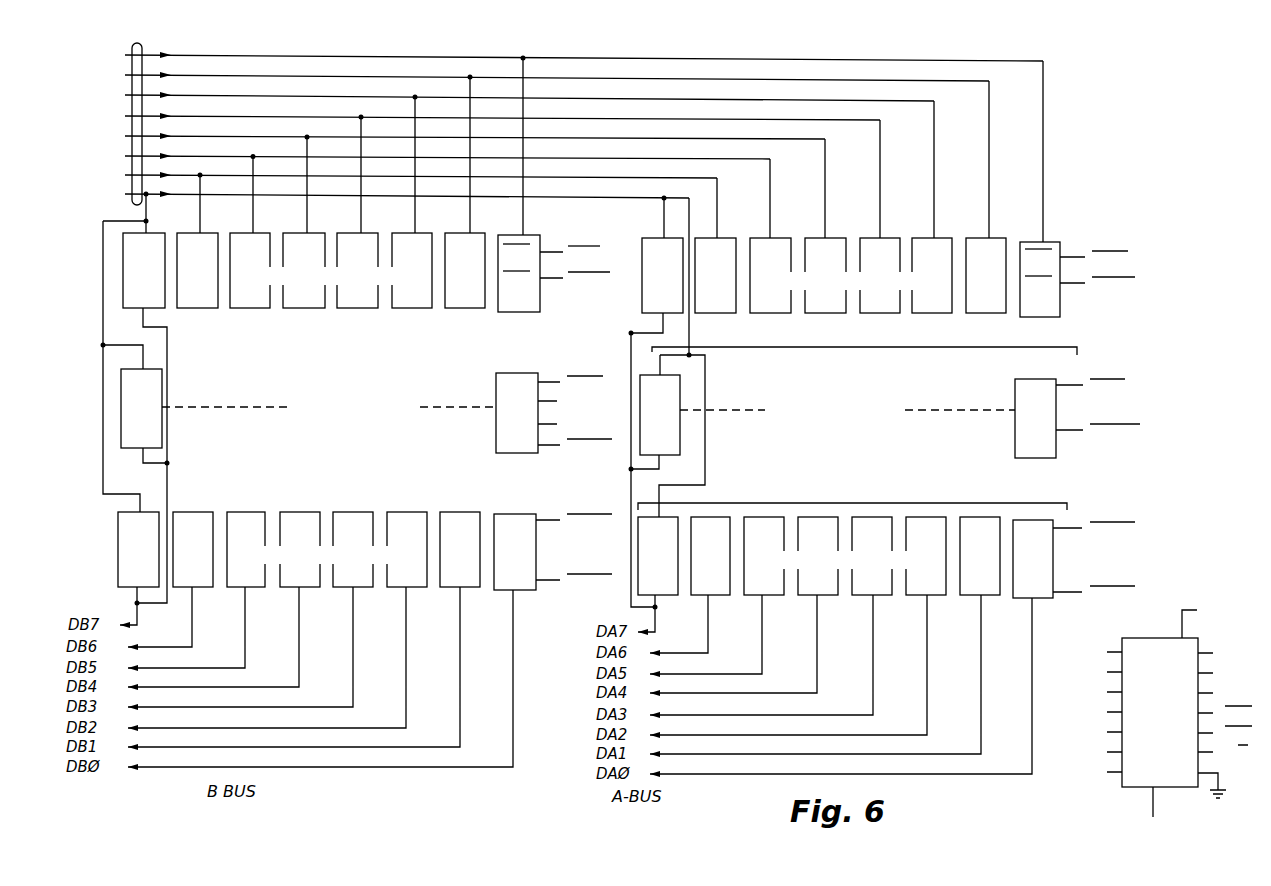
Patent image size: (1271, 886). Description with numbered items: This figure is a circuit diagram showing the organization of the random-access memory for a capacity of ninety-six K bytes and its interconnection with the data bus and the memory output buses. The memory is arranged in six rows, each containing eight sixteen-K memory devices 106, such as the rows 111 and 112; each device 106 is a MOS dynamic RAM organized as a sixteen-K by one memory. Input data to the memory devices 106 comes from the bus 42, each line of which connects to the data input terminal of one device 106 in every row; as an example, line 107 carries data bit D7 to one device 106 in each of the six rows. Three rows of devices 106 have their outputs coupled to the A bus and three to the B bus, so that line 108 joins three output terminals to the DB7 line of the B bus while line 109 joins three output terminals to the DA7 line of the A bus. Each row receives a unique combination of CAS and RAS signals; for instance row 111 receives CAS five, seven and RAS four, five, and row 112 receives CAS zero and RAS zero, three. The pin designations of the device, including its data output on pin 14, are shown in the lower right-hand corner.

The bus 42 is at (137, 43).
The memory device 106 is at (662, 528).
The line 107 is at (410, 357).
The line 108 is at (170, 466).
The line 109 is at (626, 472).
The row 111 is at (852, 491).
The row 112 is at (864, 339).
The data output pin 14 is at (1164, 802).